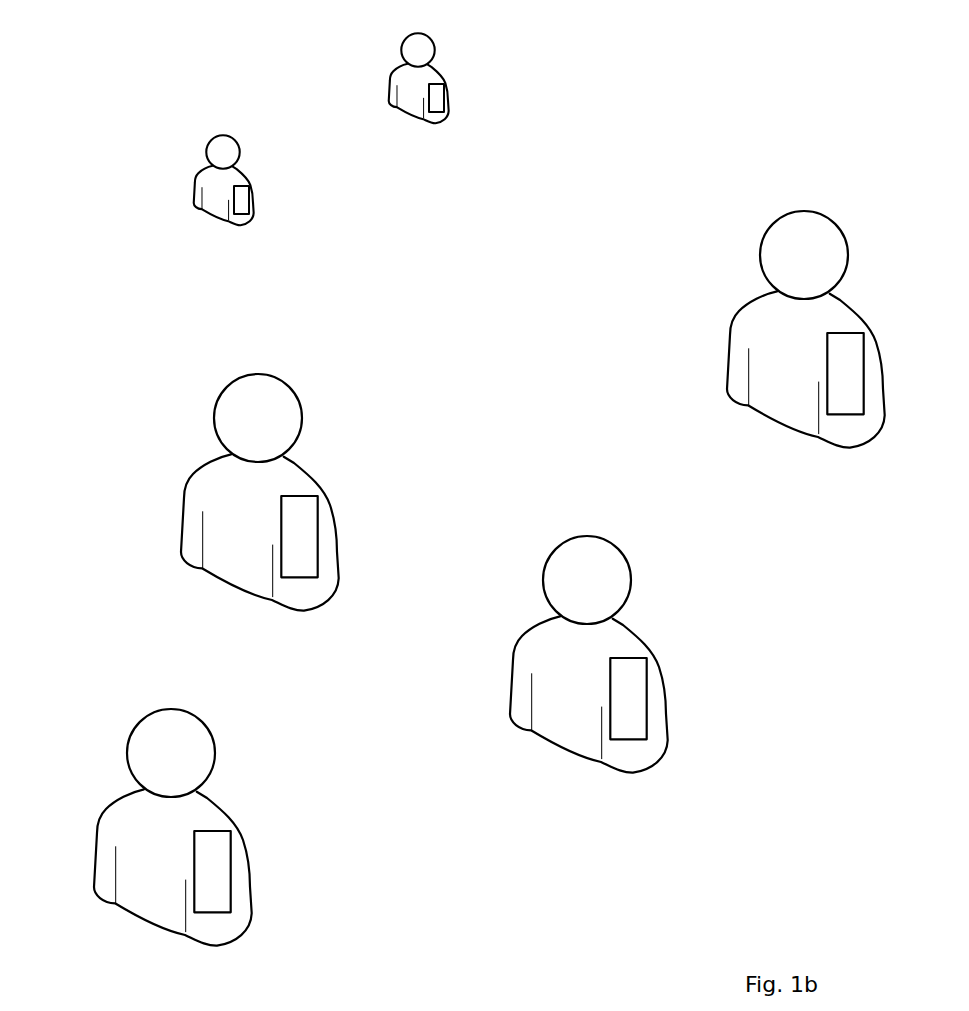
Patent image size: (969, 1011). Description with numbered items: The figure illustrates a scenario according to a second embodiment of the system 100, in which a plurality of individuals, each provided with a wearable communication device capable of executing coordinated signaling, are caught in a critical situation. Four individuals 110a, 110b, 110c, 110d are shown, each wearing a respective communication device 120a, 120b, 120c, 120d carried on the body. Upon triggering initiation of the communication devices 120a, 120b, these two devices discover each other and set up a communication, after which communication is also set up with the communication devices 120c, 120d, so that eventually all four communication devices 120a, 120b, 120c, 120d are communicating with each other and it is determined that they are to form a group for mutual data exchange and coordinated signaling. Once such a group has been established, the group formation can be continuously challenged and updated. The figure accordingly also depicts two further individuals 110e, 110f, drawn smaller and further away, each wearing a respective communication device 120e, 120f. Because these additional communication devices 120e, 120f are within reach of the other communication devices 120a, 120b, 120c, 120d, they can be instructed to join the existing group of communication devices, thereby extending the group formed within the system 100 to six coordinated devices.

The system 100 is at (866, 855).
The individual 110a is at (141, 827).
The individual 110b is at (228, 492).
The individual 110c is at (557, 654).
The individual 110d is at (774, 329).
The individual 110e is at (187, 165).
The individual 110f is at (383, 63).
The communication device 120a is at (256, 865).
The communication device 120b is at (343, 530).
The communication device 120c is at (671, 692).
The communication device 120d is at (889, 367).
The communication device 120e is at (283, 179).
The communication device 120f is at (480, 77).